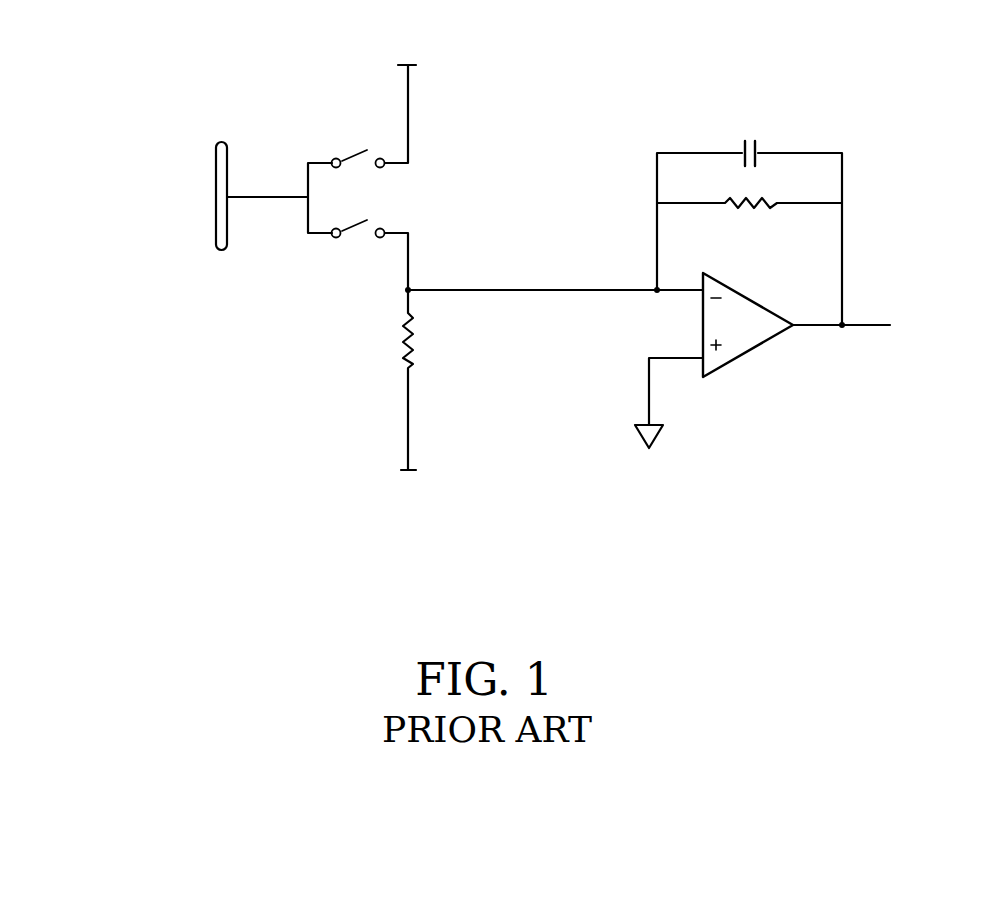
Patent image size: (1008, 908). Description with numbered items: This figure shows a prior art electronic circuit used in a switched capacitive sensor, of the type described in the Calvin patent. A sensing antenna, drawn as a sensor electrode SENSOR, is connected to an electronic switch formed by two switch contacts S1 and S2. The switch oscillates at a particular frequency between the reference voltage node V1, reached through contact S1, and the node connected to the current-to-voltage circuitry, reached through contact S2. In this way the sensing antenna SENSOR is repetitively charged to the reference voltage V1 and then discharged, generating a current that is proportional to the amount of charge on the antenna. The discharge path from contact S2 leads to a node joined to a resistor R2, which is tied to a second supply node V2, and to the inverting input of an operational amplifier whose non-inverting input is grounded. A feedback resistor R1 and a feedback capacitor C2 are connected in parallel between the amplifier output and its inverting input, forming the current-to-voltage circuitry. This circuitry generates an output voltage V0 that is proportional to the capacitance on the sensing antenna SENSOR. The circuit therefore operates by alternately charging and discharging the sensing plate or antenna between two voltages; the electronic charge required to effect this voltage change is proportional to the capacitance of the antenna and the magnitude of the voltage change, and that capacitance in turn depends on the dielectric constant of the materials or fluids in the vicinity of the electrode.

The switch S1 (to V1) S1 is at (374, 116).
The switch S2 (to R2/op-amp input) S2 is at (370, 255).
The feedback resistor R1 is at (749, 189).
The resistor R2 is at (425, 380).
The feedback capacitor C2 is at (753, 139).
The reference voltage node V1 is at (418, 48).
The voltage source V2 is at (418, 498).
The output voltage V0 is at (906, 308).
The sensor electrode SENSOR is at (197, 196).